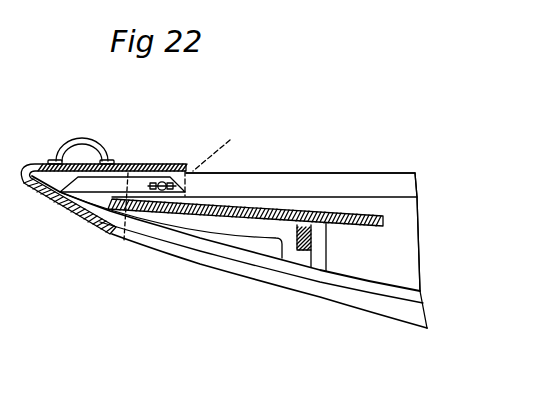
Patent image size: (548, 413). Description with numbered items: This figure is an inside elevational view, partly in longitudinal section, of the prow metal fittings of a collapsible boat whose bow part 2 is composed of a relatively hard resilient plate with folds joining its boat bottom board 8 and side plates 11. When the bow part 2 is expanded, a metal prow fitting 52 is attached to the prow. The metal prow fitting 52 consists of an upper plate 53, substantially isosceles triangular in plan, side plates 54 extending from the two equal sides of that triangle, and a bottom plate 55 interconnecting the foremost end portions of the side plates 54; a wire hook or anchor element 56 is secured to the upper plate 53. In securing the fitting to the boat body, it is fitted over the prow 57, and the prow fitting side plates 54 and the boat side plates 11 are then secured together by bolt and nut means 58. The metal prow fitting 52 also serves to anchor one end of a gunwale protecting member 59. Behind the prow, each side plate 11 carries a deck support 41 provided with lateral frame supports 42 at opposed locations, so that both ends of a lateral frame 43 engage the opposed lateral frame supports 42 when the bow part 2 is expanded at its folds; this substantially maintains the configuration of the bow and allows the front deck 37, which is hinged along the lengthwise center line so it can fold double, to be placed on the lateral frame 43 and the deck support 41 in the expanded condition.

The bow part 2 is at (405, 166).
The boat bottom board 8 is at (396, 319).
The side plate 11 is at (421, 249).
The front deck 37 is at (302, 194).
The deck support 41 is at (205, 214).
The lateral frame support 42 is at (303, 251).
The lateral frame 43 is at (312, 246).
The metal prow fitting 52 is at (146, 162).
The upper plate 53 is at (128, 163).
The side plates 54 is at (254, 180).
The bottom plate 55 is at (60, 205).
The wire hook or anchor element 56 is at (66, 147).
The prow 57 is at (97, 193).
The bolt and nut means 58 is at (214, 159).
The gunwale protecting member 59 is at (292, 208).